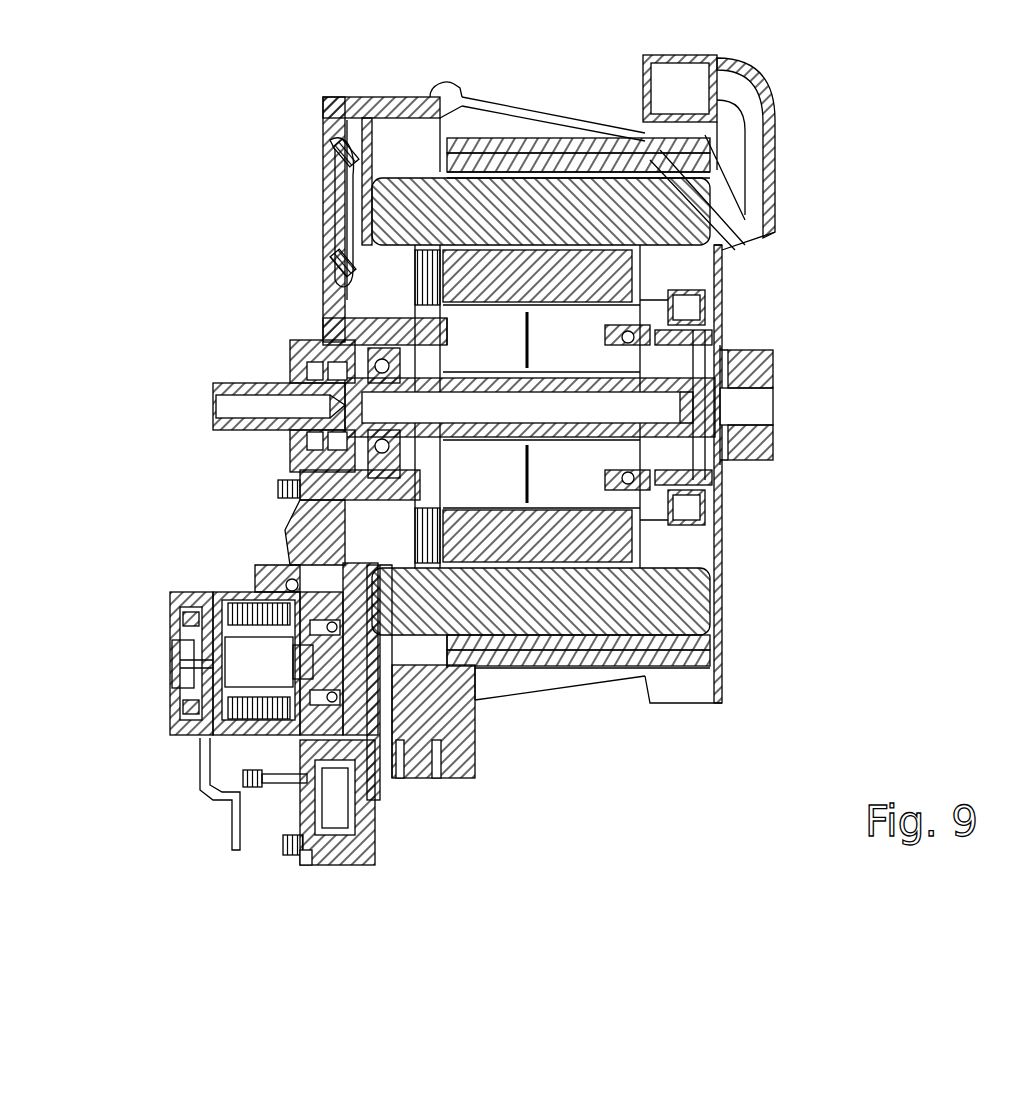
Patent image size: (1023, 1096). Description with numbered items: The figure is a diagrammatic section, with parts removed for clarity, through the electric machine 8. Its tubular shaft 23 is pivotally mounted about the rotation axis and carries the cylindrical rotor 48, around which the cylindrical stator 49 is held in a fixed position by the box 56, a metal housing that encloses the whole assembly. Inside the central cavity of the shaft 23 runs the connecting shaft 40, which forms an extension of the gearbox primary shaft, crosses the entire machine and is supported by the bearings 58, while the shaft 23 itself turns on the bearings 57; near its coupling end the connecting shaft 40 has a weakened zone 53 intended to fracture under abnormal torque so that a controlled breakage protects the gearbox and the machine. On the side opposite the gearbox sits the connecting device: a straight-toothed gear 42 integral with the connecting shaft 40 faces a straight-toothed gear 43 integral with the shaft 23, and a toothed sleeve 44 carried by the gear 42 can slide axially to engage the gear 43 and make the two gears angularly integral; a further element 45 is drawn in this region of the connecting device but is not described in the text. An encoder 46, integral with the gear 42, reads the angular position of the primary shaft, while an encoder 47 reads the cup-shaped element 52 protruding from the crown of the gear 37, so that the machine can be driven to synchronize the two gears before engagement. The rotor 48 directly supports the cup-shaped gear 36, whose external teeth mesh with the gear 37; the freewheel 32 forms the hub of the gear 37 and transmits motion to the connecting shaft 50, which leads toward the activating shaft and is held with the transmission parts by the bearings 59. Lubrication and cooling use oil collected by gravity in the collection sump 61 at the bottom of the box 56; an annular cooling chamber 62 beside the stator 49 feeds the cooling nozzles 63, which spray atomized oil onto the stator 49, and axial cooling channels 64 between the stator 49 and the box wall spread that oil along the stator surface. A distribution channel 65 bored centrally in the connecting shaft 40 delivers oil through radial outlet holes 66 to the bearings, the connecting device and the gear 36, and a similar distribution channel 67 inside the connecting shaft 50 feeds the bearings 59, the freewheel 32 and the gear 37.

The electric machine 8 is at (78, 244).
The shaft 23 is at (502, 370).
The freewheel 32 is at (292, 590).
The gear 36 is at (336, 305).
The gear 37 is at (300, 532).
The connecting shaft 40 is at (240, 390).
The gear 42 is at (712, 337).
The gear 43 is at (705, 505).
The toothed sleeve 44 is at (715, 480).
The position sensor 45 is at (700, 313).
The encoder 46 is at (775, 378).
The encoder 47 is at (220, 585).
The rotor 48 is at (541, 406).
The stator 49 is at (551, 170).
The connecting shaft 50 is at (228, 631).
The cup-shaped element 52 is at (208, 745).
The weakened zone 53 is at (292, 392).
The box 56 is at (722, 620).
The bearings 57 is at (610, 330).
The bearings 58 is at (300, 462).
The bearings 59 is at (290, 777).
The collection sump 61 is at (472, 748).
The annular cooling chamber 62 is at (347, 189).
The cooling nozzles 63 is at (348, 151).
The cooling channels 64 is at (517, 150).
The distribution channel 65 is at (530, 407).
The outlet holes 66 is at (668, 406).
The distribution channel 67 is at (269, 662).